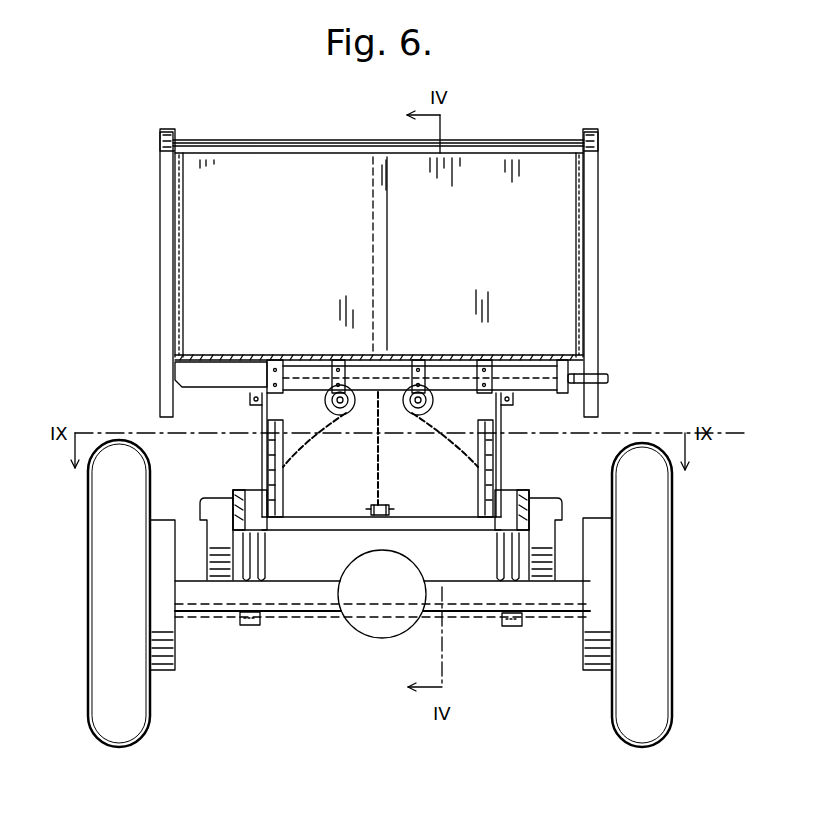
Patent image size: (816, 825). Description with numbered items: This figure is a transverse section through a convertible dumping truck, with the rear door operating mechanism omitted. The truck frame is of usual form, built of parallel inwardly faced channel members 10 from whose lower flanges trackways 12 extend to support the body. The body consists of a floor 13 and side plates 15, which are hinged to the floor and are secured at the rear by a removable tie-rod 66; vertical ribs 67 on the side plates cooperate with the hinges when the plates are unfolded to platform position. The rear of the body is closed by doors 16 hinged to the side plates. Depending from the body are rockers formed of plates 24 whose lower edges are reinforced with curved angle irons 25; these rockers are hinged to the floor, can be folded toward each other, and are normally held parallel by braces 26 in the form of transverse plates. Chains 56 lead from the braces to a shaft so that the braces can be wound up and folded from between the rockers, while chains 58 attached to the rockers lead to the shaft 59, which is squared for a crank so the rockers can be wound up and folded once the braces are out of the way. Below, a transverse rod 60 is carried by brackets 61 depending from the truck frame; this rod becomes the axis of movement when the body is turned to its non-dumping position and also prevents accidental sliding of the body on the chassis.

The channel member 10 is at (245, 489).
The trackway 12 is at (267, 531).
The floor 13 is at (222, 354).
The side plate 15 is at (182, 282).
The door 16 is at (268, 165).
The rocker plate 24 is at (262, 405).
The curved angle iron 25 is at (283, 487).
The brace 26 is at (412, 516).
The chain 56 is at (383, 450).
The chain 58 is at (342, 438).
The shaft 59 is at (600, 378).
The transverse rod 60 is at (458, 612).
The bracket 61 is at (248, 625).
The tie-rod 66 is at (540, 141).
The vertical rib 67 is at (165, 262).